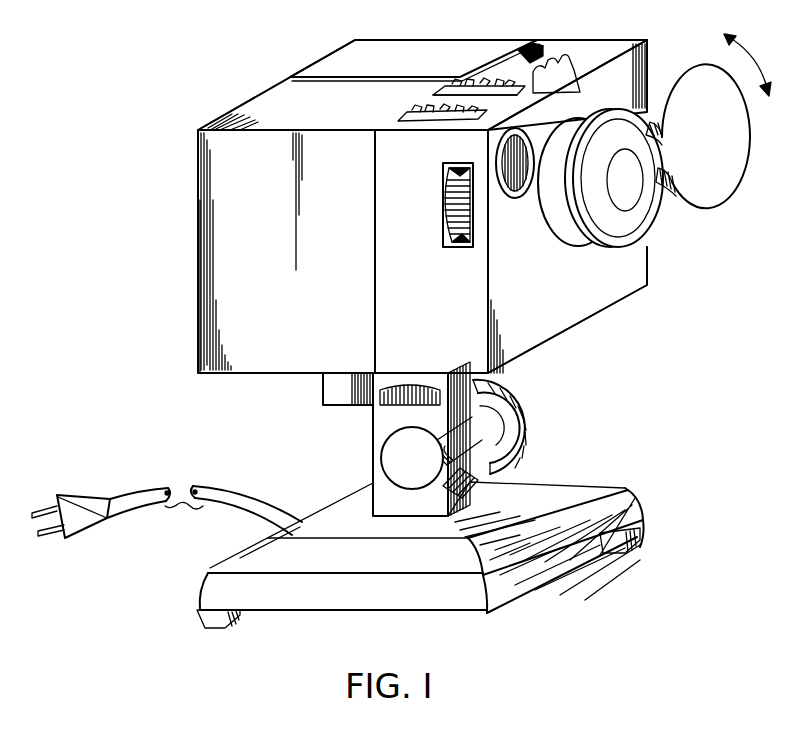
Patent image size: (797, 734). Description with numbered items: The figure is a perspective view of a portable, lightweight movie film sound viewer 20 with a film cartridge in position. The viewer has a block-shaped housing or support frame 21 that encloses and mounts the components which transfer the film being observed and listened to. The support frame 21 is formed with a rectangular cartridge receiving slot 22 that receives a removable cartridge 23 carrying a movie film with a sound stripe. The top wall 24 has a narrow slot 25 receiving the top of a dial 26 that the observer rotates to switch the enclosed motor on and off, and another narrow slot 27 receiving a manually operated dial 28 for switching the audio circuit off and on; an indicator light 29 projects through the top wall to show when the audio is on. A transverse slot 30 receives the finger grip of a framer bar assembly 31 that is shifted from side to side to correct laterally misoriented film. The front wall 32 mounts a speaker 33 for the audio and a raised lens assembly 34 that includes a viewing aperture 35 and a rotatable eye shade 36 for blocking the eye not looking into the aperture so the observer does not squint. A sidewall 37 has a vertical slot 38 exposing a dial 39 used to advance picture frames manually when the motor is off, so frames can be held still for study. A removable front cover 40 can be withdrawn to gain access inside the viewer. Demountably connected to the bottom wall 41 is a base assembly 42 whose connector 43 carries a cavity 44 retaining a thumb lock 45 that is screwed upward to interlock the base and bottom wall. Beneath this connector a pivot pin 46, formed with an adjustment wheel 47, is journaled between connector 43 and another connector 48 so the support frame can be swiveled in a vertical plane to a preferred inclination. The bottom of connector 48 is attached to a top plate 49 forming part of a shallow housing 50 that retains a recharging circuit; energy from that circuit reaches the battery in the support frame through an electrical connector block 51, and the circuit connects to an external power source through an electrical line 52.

The movie film sound viewer 20 is at (400, 30).
The support frame 21 is at (196, 244).
The cartridge receiving slot 22 is at (290, 77).
The cartridge 23 is at (414, 60).
The top wall 24 is at (245, 112).
The narrow slot 25 is at (480, 92).
The dial 26 is at (510, 85).
The narrow slot 27 is at (402, 120).
The dial 28 is at (428, 122).
The indicator light 29 is at (525, 45).
The transverse slot 30 is at (598, 42).
The framer bar assembly 31 is at (560, 70).
The front wall 32 is at (600, 289).
The speaker 33 is at (512, 197).
The lens assembly 34 is at (563, 230).
The viewing aperture 35 is at (628, 205).
The eye shade 36 is at (710, 78).
The sidewall 37 is at (232, 316).
The vertical slot 38 is at (450, 250).
The dial 39 is at (468, 218).
The front cover 40 is at (572, 318).
The bottom wall 41 is at (235, 373).
The base assembly 42 is at (306, 495).
The connector 43 is at (388, 424).
The cavity 44 is at (500, 425).
The thumb lock 45 is at (523, 405).
The pivot pin 46 is at (395, 460).
The adjustment wheel 47 is at (500, 378).
The connector 48 is at (487, 476).
The top plate 49 is at (283, 527).
The shallow housing 50 is at (548, 558).
The electrical connector block 51 is at (340, 393).
The electrical line 52 is at (218, 483).